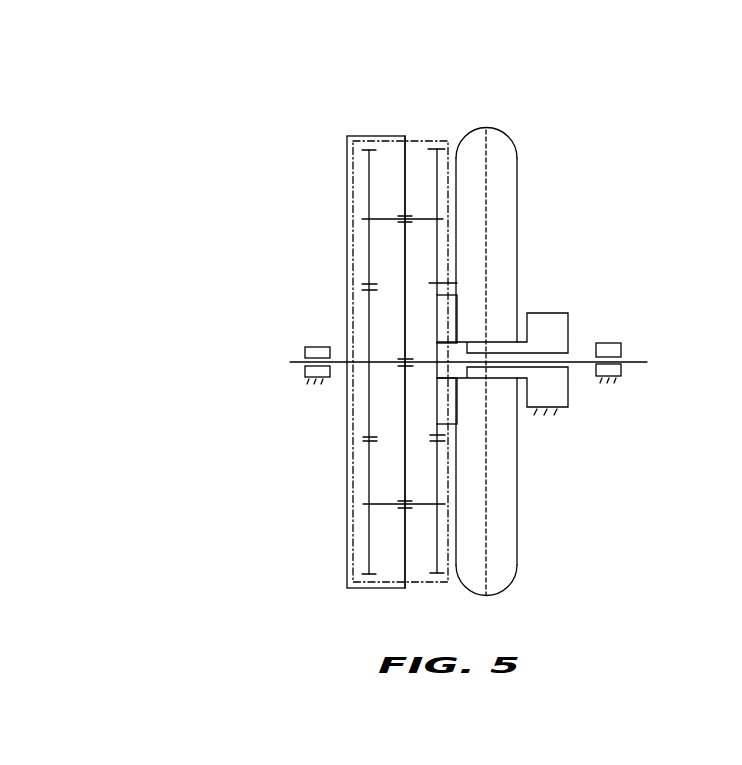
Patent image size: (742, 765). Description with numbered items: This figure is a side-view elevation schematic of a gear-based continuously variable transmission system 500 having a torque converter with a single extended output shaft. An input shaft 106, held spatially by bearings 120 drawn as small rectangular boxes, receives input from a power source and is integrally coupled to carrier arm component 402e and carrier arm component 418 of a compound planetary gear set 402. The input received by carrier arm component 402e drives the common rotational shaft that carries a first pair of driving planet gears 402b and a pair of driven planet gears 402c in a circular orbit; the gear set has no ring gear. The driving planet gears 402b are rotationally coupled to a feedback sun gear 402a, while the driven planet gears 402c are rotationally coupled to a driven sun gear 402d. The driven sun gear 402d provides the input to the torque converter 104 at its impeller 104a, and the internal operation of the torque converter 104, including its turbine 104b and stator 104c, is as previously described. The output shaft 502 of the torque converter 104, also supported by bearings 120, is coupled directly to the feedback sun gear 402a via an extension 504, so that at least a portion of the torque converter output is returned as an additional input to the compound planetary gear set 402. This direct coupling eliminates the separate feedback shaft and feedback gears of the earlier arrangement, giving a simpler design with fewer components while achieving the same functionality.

The continuously variable transmission system 500 is at (606, 113).
The compound planetary gear set 402 is at (364, 136).
The impeller 104a is at (477, 130).
The torque converter 104 is at (592, 337).
The carrier arm component 402e is at (403, 216).
The carrier arm component 418 is at (405, 245).
The driven planet gears 402c is at (457, 283).
The driven sun gear 402d is at (437, 295).
The driving planet gears 402b is at (370, 284).
The feedback sun gear 402a is at (370, 288).
The bearings 120 is at (296, 352).
The stator 104c is at (569, 328).
The input shaft 106 is at (286, 365).
The extension 504 is at (427, 362).
The output shaft 502 is at (635, 372).
The turbine 104b is at (510, 565).